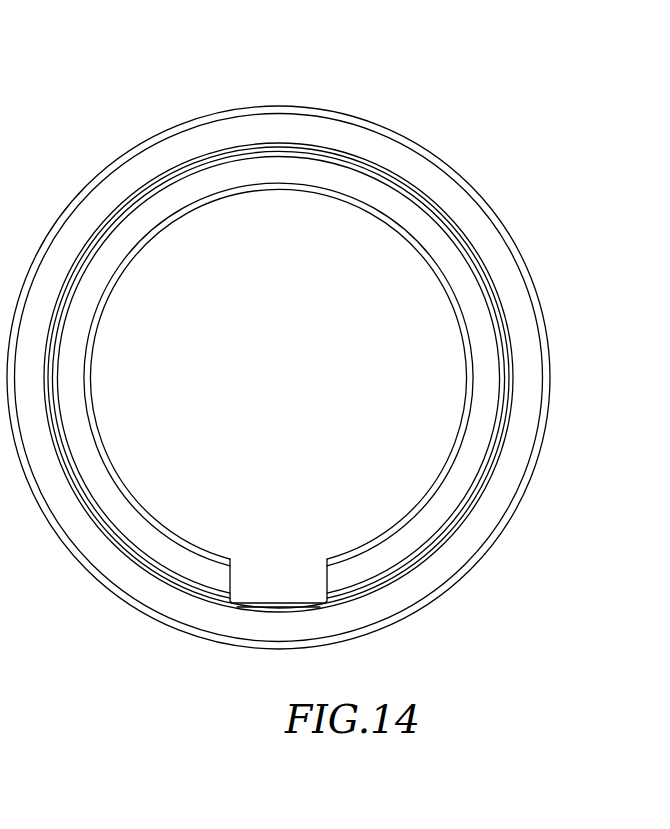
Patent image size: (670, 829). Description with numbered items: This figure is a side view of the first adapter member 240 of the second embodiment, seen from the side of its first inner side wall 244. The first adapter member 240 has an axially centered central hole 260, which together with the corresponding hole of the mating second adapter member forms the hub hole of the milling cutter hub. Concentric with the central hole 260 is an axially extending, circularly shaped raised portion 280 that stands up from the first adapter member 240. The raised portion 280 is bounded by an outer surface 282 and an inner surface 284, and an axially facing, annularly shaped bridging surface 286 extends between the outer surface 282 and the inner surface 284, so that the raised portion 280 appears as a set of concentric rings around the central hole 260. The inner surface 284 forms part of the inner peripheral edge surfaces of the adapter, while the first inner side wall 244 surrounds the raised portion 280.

The first adapter member 240 is at (135, 98).
The first inner side wall 244 is at (152, 592).
The central hole 260 is at (358, 243).
The raised portion 280 is at (458, 272).
The outer surface 282 is at (508, 398).
The inner surface 284 is at (443, 460).
The bridging surface 286 is at (475, 445).